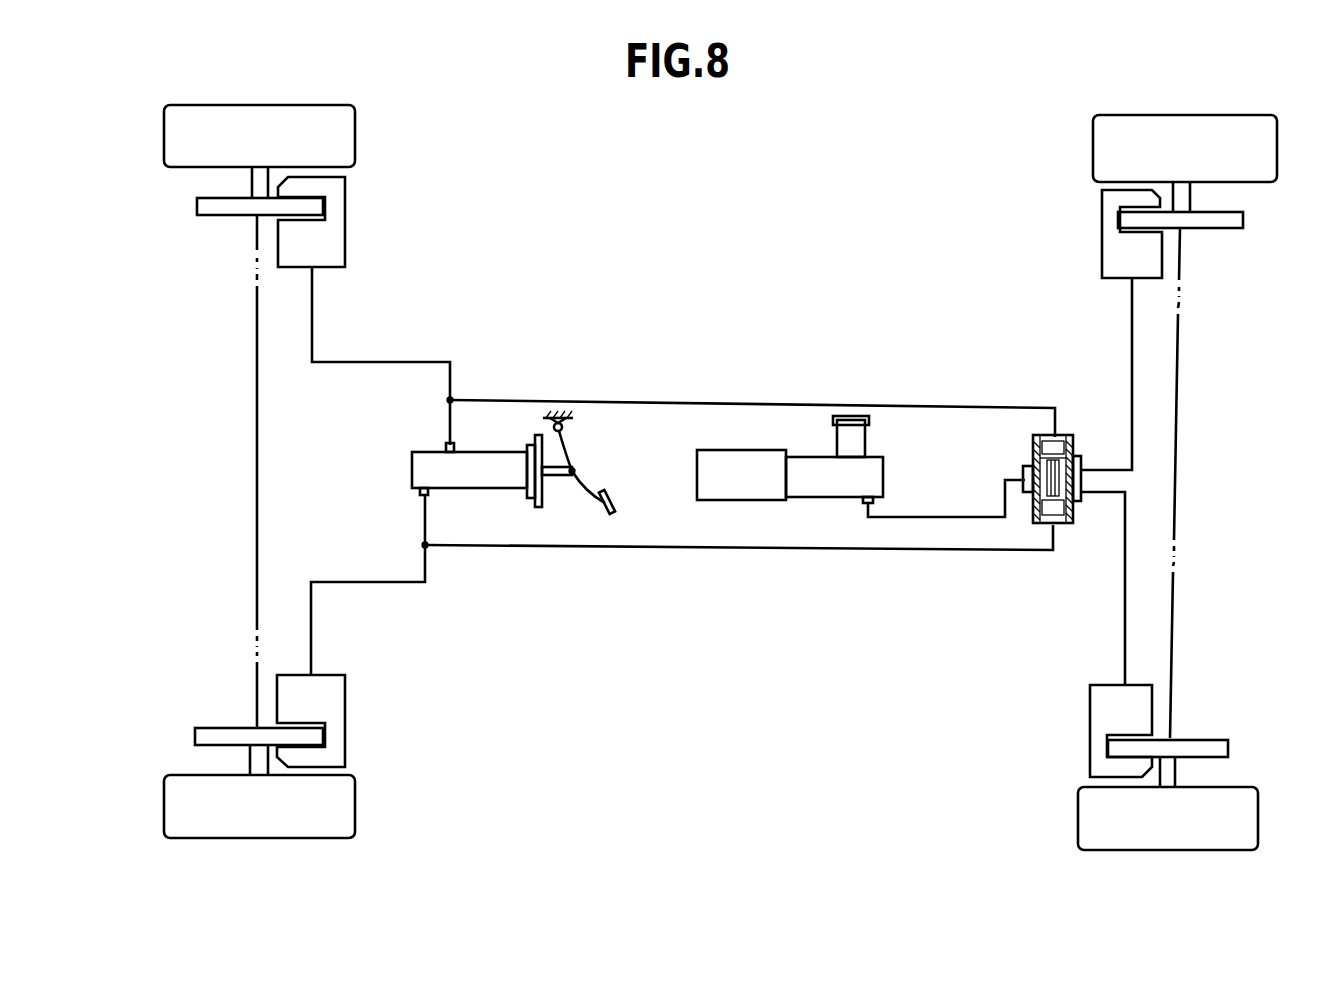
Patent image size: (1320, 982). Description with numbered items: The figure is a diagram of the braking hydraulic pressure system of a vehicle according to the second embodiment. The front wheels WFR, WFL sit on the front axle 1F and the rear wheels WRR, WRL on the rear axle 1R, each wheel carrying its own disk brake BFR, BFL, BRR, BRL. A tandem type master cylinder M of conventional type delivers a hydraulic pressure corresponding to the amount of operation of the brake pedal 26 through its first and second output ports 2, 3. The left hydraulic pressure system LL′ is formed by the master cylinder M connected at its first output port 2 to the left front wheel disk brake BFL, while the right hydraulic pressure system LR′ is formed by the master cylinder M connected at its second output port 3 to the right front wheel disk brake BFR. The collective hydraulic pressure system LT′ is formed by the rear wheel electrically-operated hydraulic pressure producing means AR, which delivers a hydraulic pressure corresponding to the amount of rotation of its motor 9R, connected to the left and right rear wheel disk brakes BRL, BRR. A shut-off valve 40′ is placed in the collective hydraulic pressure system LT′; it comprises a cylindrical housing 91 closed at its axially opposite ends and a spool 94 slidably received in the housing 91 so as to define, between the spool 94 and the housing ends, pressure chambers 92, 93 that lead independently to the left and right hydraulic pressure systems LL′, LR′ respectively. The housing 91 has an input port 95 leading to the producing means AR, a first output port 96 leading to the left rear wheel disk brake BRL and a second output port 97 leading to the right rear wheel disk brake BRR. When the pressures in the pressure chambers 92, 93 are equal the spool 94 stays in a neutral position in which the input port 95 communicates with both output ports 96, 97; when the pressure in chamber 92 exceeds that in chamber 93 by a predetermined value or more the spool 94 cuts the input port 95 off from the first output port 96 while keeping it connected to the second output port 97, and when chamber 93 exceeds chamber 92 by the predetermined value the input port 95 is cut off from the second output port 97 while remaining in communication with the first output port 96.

The front right wheel WFR is at (356, 141).
The right front wheel disk brake BFR is at (350, 213).
The front left wheel WFL is at (356, 797).
The left front wheel disk brake BFL is at (350, 703).
The rear right wheel WRR is at (1093, 150).
The right rear wheel disk brake BRR is at (1102, 237).
The rear left wheel WRL is at (1078, 805).
The left rear wheel disk brake BRL is at (1090, 713).
The front axle 1F is at (258, 478).
The rear axle 1R is at (1176, 494).
The right hydraulic pressure system LR′ is at (395, 362).
The left hydraulic pressure system LL′ is at (382, 582).
The collective hydraulic pressure system LT′ is at (940, 517).
The tandem type master cylinder M is at (470, 455).
The second output port 3 is at (447, 445).
The first output port 2 is at (420, 494).
The brake pedal 26 is at (613, 506).
The motor 9R is at (705, 445).
The rear wheel electrically-operated hydraulic pressure producing means AR is at (875, 448).
The shut-off valve 40′ is at (1070, 481).
The cylindrical housing 91 is at (1037, 442).
The pressure chamber 92 is at (1046, 518).
The pressure chamber 93 is at (1056, 442).
The spool 94 is at (1066, 460).
The input port 95 is at (1027, 470).
The first output port 96 is at (1074, 506).
The second output port 97 is at (1076, 478).